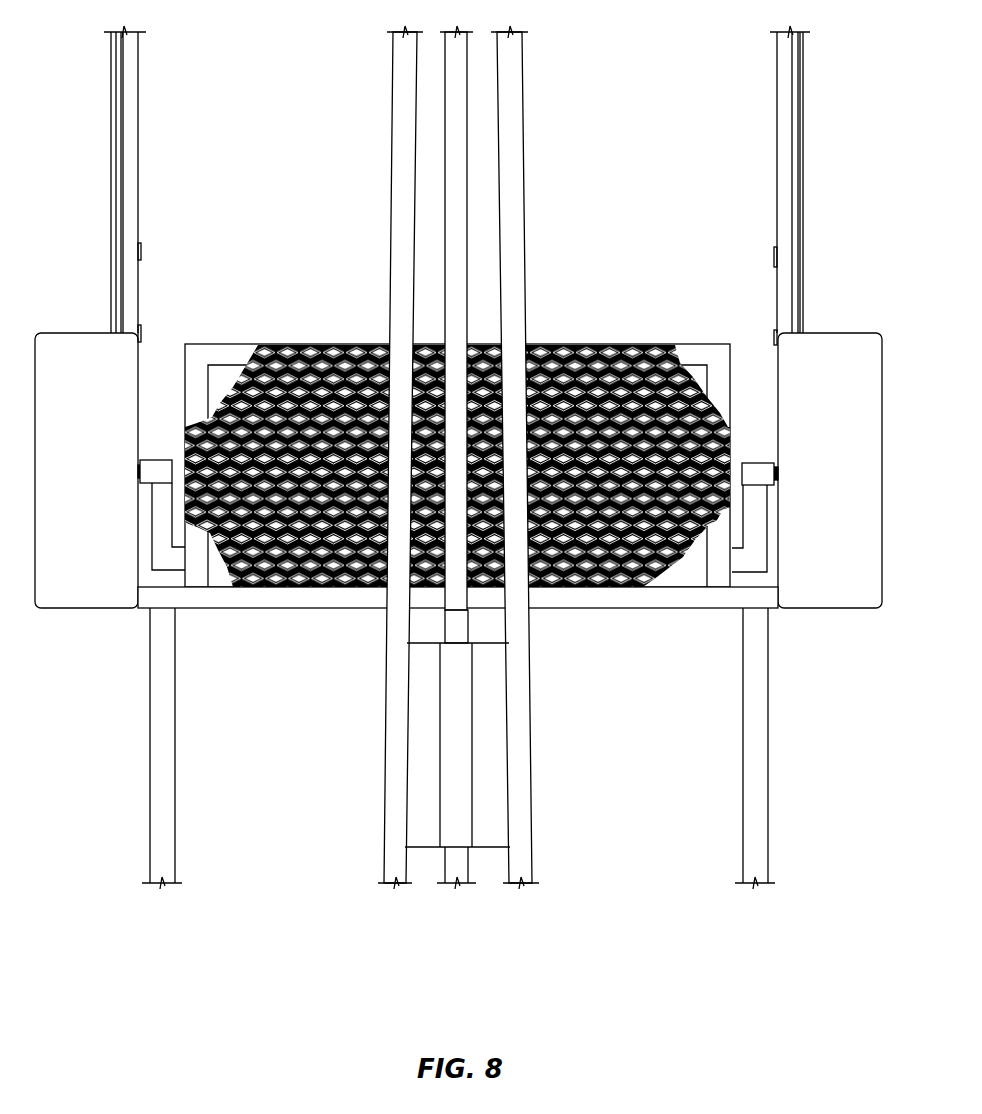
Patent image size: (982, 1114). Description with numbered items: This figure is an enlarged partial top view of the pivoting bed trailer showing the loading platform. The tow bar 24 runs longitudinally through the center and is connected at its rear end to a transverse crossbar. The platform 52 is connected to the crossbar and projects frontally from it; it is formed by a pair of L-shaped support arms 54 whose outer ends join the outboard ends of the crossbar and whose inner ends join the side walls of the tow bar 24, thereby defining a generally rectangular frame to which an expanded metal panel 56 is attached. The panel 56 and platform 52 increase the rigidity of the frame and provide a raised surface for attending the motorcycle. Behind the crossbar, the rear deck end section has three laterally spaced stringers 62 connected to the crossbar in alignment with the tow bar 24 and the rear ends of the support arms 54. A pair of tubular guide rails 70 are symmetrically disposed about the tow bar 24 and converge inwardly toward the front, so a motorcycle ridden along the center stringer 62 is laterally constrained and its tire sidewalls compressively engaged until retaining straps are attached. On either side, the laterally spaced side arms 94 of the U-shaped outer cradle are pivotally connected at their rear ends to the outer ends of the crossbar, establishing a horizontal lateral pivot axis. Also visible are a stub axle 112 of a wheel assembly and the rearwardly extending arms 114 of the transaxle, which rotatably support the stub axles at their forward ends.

The tow bar 24 is at (461, 457).
The platform 52 is at (326, 318).
The L-shaped support arms 54 is at (199, 358).
The expanded metal panel 56 is at (580, 348).
The stringers 62 is at (162, 803).
The tubular guide rails 70 is at (397, 740).
The side arms 94 is at (132, 154).
The stub axle 112 is at (764, 473).
The rearwardly extending arms 114 is at (143, 470).